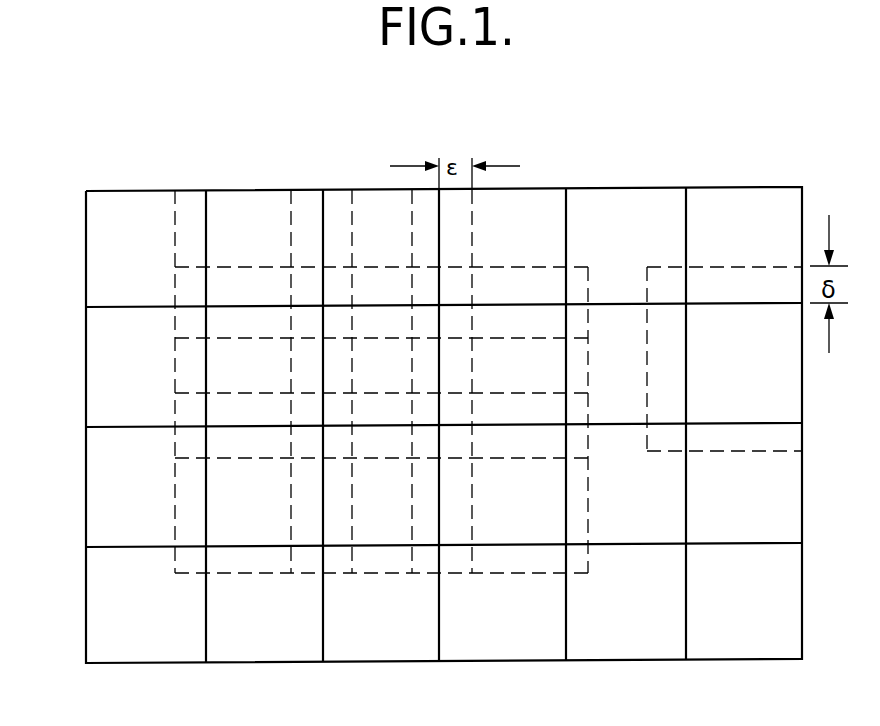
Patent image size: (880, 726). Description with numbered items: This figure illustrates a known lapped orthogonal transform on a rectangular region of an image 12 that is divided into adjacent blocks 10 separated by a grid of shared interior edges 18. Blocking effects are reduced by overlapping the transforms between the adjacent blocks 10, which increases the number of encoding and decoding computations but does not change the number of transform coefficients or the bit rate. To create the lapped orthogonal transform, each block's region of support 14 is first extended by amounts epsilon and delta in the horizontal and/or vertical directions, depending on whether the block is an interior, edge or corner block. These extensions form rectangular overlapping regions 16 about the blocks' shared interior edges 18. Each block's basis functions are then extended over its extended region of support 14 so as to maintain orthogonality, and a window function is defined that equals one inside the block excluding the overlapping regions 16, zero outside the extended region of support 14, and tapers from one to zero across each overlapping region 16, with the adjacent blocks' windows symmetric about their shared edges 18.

The block 10 is at (113, 635).
The image 12 is at (306, 671).
The region of support 14 is at (723, 265).
The rectangular overlapping region 16 is at (352, 161).
The shared interior edge 18 is at (322, 218).